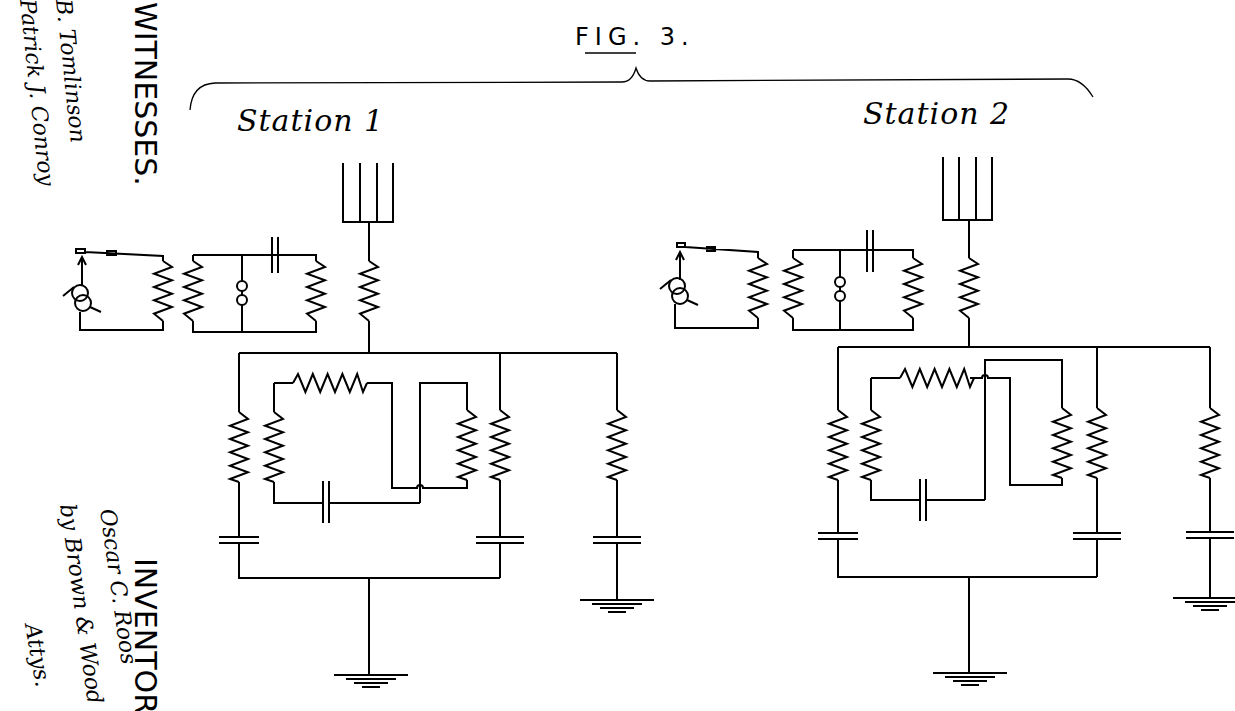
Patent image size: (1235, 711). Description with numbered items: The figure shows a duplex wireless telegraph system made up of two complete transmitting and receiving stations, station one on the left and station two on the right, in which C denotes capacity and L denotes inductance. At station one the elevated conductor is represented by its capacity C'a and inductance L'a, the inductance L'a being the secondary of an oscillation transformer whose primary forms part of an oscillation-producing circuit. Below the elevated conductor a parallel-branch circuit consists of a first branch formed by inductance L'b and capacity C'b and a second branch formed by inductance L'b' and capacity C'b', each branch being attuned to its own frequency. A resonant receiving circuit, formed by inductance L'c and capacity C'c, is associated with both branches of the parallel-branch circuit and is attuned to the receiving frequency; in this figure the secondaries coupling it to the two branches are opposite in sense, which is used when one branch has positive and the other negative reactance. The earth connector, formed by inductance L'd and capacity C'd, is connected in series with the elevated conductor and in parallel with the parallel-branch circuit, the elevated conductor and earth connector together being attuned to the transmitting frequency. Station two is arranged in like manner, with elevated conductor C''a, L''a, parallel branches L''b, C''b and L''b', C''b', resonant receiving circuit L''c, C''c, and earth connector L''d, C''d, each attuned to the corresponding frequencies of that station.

The elevated conductor capacity C'a is at (390, 212).
The elevated conductor inductance L'a is at (395, 291).
The first branch inductance L'b is at (211, 446).
The first branch capacity C'b is at (217, 526).
The resonant receiving circuit inductance L'c is at (330, 401).
The resonant receiving circuit capacity C'c is at (308, 520).
The second branch inductance L'b' is at (523, 442).
The second branch capacity C'b' is at (517, 522).
The earth connector inductance L'd is at (644, 442).
The earth connector capacity C'd is at (636, 523).
The elevated conductor capacity C''a is at (995, 207).
The elevated conductor inductance L''a is at (993, 288).
The first branch inductance L''b is at (807, 440).
The first branch capacity C''b is at (812, 520).
The resonant receiving circuit inductance L''c is at (937, 397).
The resonant receiving circuit capacity C''c is at (904, 520).
The second branch inductance L''b' is at (1124, 443).
The second branch capacity C''b' is at (1064, 533).
The earth connector inductance L''d is at (1180, 445).
The earth connector capacity C''d is at (1185, 533).